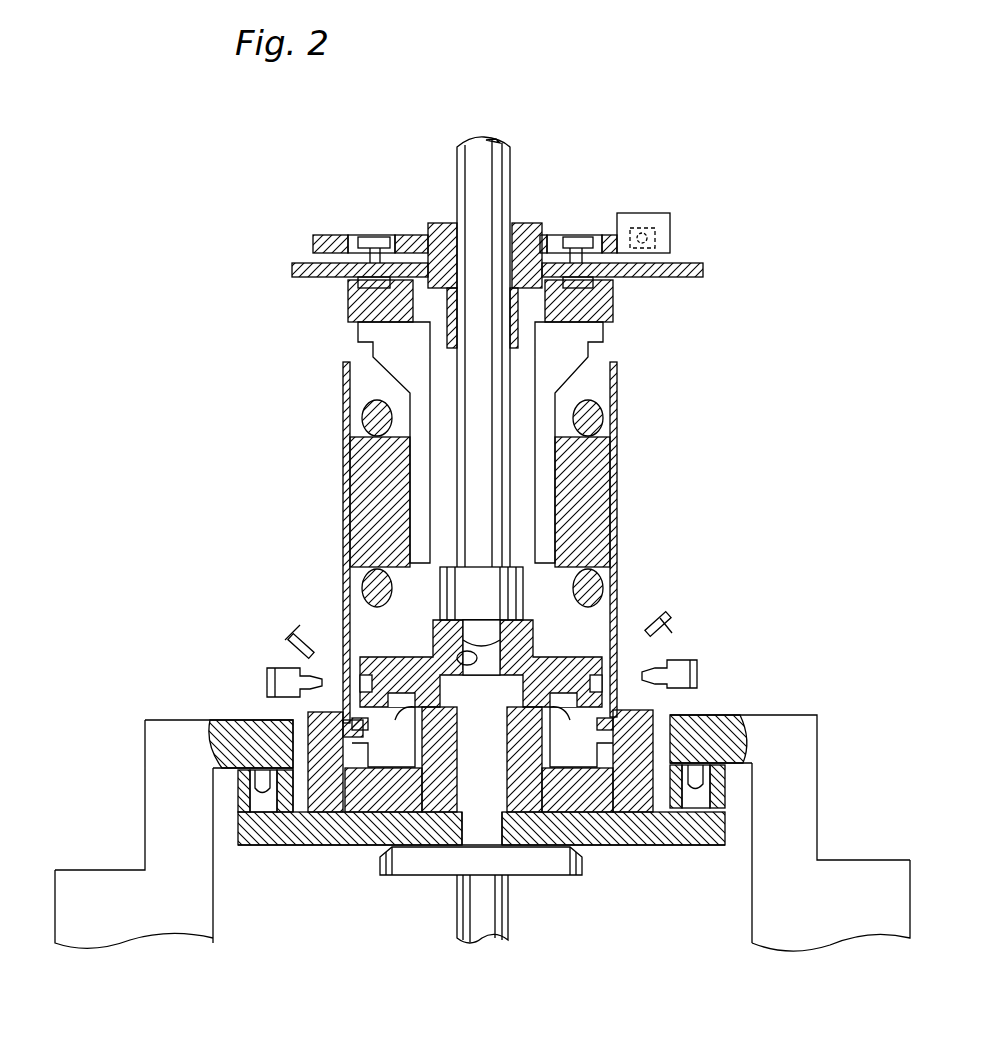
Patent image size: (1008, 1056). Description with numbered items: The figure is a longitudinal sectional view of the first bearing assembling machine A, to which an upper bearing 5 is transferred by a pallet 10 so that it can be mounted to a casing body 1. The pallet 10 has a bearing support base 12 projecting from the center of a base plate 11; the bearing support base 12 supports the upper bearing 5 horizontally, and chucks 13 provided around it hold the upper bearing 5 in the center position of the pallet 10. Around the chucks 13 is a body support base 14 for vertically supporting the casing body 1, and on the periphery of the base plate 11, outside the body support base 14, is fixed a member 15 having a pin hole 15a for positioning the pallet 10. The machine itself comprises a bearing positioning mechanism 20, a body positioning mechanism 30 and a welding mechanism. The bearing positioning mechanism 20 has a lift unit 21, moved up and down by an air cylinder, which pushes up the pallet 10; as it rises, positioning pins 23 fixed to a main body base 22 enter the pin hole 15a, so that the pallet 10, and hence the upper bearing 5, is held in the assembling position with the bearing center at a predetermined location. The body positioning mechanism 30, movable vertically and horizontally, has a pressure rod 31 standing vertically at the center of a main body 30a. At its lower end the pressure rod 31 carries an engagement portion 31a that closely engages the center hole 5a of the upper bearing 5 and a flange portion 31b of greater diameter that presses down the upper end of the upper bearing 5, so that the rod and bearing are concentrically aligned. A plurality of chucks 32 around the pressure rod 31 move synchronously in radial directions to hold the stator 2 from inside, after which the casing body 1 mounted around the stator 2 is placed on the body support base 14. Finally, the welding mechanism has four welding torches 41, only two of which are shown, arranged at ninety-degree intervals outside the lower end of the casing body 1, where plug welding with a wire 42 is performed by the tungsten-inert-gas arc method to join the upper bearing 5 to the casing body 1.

The casing body 1 is at (350, 437).
The stator 2 is at (597, 458).
The upper bearing 5 is at (573, 650).
The center hole 5a is at (470, 660).
The pallet 10 is at (360, 862).
The base plate 11 is at (327, 833).
The bearing support base 12 is at (440, 800).
The chucks 13 is at (400, 735).
The body support base 14 is at (637, 785).
The member 15 is at (240, 803).
The pin hole 15a is at (268, 808).
The bearing positioning mechanism 20 is at (708, 624).
The lift unit 21 is at (508, 908).
The main body base 22 is at (862, 870).
The positioning pins 23 is at (262, 780).
The body positioning mechanism 30 is at (400, 200).
The main body 30a is at (300, 262).
The pressure rod 31 is at (493, 190).
The engagement portion 31a is at (503, 597).
The flange portion 31b is at (482, 580).
The chucks 32 is at (420, 530).
The welding torches 41 is at (283, 668).
The wire 42 is at (332, 670).
The first bearing assembling machine A is at (632, 178).